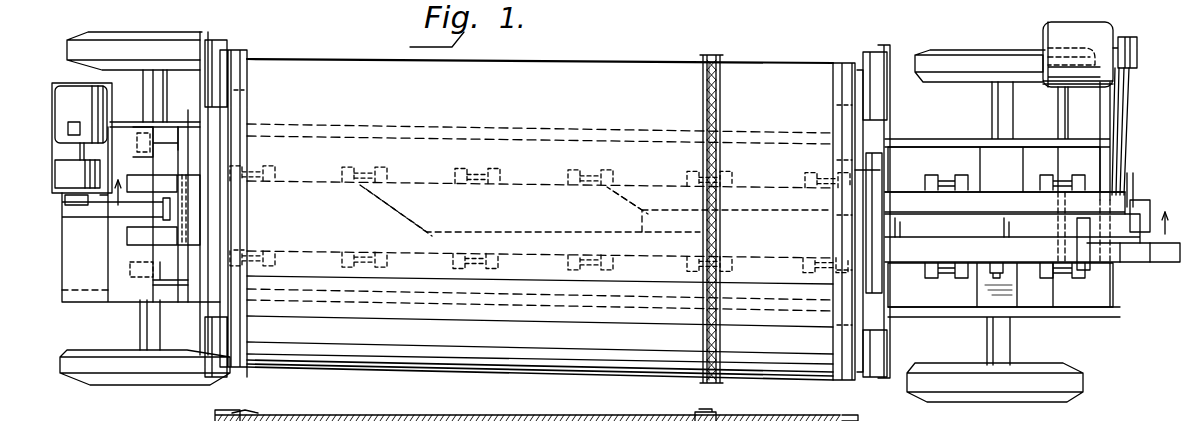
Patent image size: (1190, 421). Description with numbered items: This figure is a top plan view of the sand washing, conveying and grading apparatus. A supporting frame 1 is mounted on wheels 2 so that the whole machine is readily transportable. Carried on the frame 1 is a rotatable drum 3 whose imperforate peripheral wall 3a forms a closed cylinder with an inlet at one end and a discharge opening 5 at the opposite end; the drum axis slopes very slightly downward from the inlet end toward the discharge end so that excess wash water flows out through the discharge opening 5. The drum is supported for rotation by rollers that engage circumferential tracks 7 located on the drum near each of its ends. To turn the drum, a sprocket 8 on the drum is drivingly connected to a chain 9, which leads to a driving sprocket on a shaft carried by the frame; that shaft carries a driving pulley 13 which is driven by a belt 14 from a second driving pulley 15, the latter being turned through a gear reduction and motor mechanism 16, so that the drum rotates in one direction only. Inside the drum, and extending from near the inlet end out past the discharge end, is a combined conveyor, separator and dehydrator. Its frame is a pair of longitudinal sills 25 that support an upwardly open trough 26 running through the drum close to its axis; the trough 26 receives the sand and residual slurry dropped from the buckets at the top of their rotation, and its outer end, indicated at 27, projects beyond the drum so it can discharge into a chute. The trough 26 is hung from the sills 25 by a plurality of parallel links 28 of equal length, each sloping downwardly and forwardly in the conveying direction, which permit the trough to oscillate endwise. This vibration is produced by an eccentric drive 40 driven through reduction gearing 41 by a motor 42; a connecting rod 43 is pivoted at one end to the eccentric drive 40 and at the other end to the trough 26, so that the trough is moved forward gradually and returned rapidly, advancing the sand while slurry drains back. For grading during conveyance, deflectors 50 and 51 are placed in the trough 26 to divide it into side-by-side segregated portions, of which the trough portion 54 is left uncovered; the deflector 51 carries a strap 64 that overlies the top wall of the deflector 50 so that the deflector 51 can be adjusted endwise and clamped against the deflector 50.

The supporting frame 1 is at (915, 139).
The wheels 2 is at (165, 36).
The rotatable drum 3 is at (615, 54).
The imperforate peripheral wall 3a is at (757, 418).
The discharge opening 5 is at (918, 163).
The circumferential tracks 7 is at (242, 72).
The sprocket 8 is at (714, 55).
The chain 9 is at (722, 85).
The driving pulley 13 is at (1135, 190).
The belt 14 is at (1118, 118).
The driving pulley 15 is at (1138, 48).
The gear reduction and motor mechanism 16 is at (1055, 32).
The longitudinal sills 25 is at (165, 180).
The trough 26 is at (290, 182).
The trough extension 27 is at (1161, 274).
The links 28 is at (480, 188).
The eccentric drive 40 is at (65, 202).
The reduction gearing 41 is at (70, 170).
The motor 42 is at (62, 118).
The connecting rod 43 is at (95, 212).
The deflector 50 is at (1032, 240).
The deflector 51 is at (1012, 228).
The trough portion 54 is at (1005, 203).
The strap 64 is at (1077, 229).